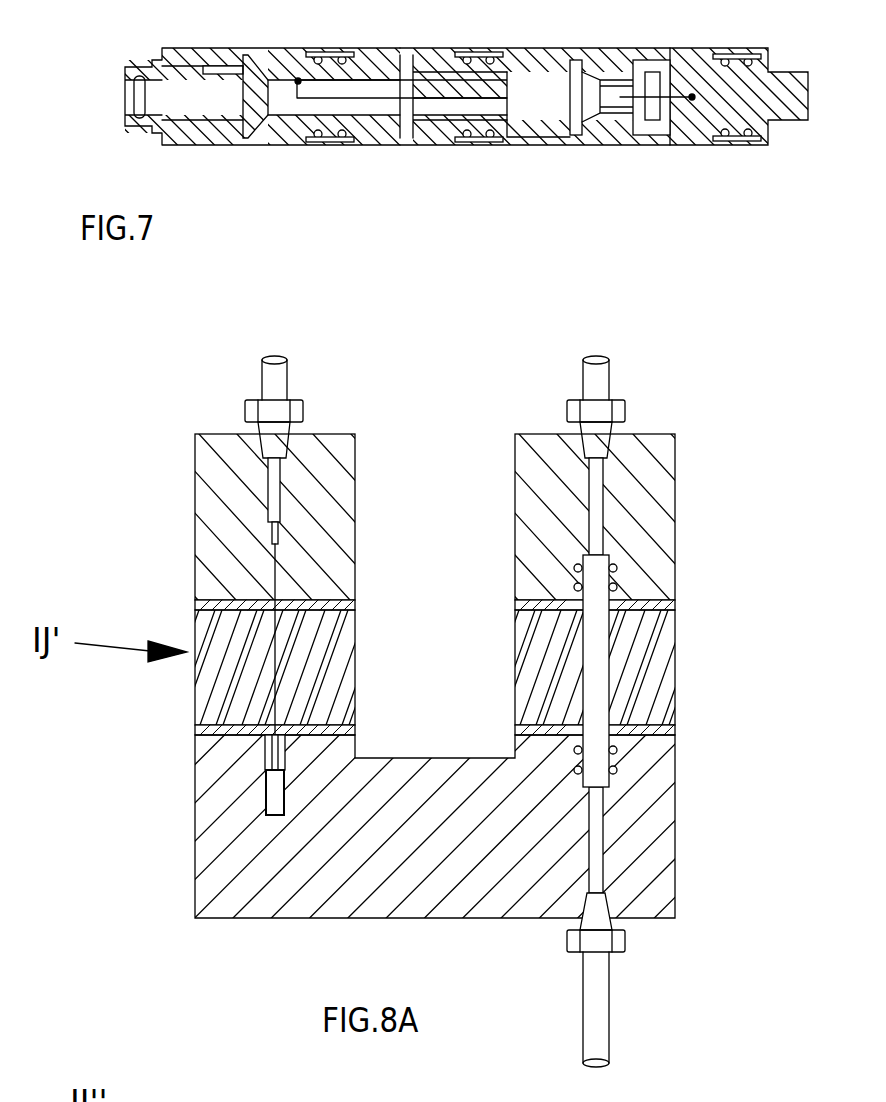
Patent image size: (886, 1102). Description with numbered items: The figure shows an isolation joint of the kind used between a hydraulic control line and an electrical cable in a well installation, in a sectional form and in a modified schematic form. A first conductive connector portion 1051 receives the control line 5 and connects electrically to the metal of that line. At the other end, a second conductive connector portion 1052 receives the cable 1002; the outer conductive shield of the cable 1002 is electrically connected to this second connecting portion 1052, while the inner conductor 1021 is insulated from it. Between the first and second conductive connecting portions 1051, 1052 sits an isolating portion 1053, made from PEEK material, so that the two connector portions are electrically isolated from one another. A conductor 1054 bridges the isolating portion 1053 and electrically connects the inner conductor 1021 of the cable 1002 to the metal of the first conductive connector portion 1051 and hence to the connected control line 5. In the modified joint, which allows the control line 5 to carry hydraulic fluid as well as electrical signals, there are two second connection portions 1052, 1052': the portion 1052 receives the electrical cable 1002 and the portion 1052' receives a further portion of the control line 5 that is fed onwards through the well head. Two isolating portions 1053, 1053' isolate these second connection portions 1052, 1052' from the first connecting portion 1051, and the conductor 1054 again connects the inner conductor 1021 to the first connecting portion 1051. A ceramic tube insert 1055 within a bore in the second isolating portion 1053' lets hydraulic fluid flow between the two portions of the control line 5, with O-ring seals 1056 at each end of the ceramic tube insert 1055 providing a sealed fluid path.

In FIG. 8A, the control line 5 is at (598, 380).
In FIG. 8A, the cable 1002 is at (268, 388).
In FIG. 8A, the inner conductor 1021 is at (272, 486).
In FIG. 7, the first conductive connector portion 1051 is at (268, 145).
In FIG. 8A, the first conductive connector portion 1051 is at (240, 875).
In FIG. 7, the second conductive connector portion 1052 is at (714, 154).
In FIG. 8A, the second conductive connector portion 1052 is at (255, 517).
In FIG. 8A, the second connection portion 1052' is at (575, 471).
In FIG. 7, the isolating portion 1053 is at (465, 72).
In FIG. 8A, the isolating portion 1053 is at (225, 676).
In FIG. 8A, the second isolating portion 1053' is at (646, 672).
In FIG. 7, the conductor 1054 is at (507, 145).
In FIG. 8A, the conductor 1054 is at (273, 585).
In FIG. 8A, the ceramic tube insert 1055 is at (610, 690).
In FIG. 8A, the O-ring seals 1056 is at (615, 568).